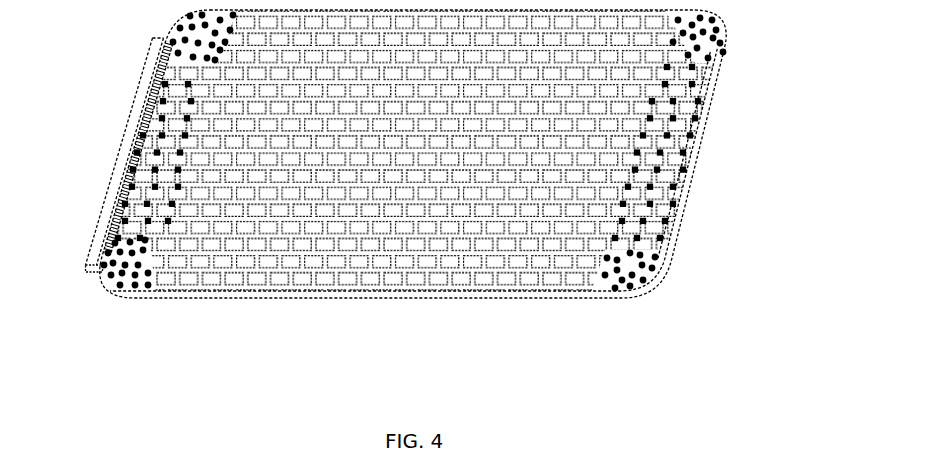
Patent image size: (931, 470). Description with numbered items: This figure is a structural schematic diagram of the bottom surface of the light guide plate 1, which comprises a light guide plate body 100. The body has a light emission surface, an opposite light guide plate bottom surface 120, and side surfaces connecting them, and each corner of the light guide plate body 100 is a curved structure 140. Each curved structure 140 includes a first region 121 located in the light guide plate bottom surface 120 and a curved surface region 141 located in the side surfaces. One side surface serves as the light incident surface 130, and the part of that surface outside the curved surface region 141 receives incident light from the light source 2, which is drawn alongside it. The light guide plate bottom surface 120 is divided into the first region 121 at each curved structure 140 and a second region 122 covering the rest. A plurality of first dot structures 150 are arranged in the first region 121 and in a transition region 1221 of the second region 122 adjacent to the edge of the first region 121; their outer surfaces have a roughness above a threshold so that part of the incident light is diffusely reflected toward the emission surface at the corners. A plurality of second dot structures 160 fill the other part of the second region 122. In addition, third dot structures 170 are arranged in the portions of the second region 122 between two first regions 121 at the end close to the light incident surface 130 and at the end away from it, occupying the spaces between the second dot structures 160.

The light guide plate body 100 is at (722, 253).
The light guide plate 1 is at (690, 200).
The light source 2 is at (127, 127).
The light guide plate bottom surface 120 is at (723, 75).
The first region 121 is at (235, 14).
The second region 122 is at (283, 255).
The transition region 1221 is at (233, 15).
The light incident surface 130 is at (129, 171).
The curved structure 140 is at (717, 24).
The curved surface region 141 is at (118, 296).
The first dot structure 150 is at (143, 294).
The second dot structure 160 is at (690, 128).
The third dot structure 170 is at (693, 153).